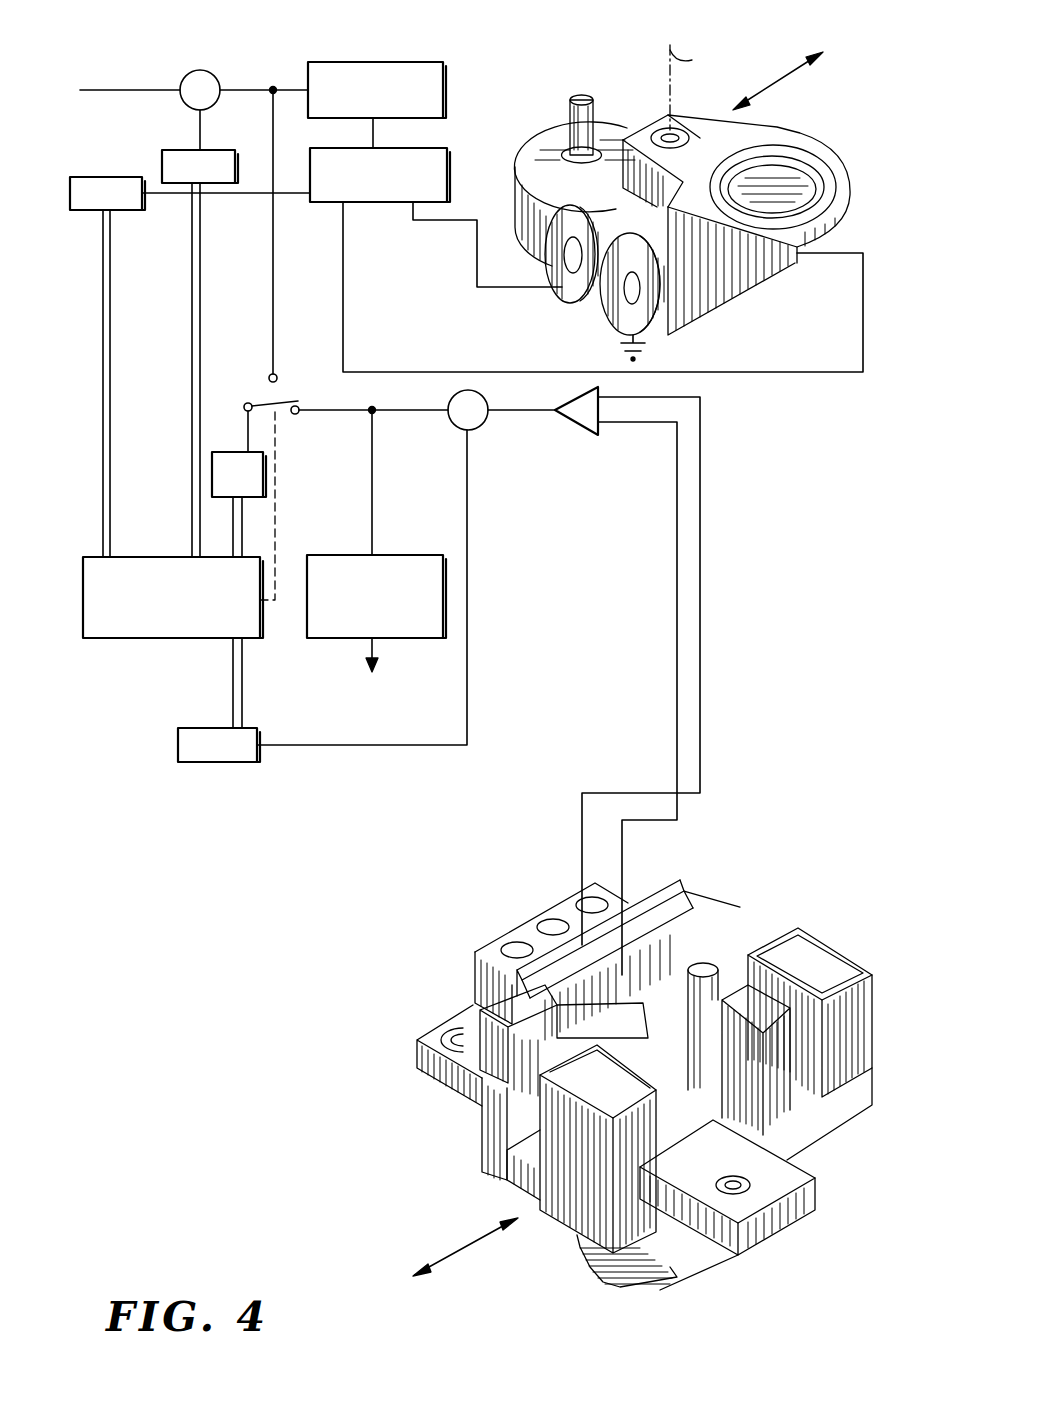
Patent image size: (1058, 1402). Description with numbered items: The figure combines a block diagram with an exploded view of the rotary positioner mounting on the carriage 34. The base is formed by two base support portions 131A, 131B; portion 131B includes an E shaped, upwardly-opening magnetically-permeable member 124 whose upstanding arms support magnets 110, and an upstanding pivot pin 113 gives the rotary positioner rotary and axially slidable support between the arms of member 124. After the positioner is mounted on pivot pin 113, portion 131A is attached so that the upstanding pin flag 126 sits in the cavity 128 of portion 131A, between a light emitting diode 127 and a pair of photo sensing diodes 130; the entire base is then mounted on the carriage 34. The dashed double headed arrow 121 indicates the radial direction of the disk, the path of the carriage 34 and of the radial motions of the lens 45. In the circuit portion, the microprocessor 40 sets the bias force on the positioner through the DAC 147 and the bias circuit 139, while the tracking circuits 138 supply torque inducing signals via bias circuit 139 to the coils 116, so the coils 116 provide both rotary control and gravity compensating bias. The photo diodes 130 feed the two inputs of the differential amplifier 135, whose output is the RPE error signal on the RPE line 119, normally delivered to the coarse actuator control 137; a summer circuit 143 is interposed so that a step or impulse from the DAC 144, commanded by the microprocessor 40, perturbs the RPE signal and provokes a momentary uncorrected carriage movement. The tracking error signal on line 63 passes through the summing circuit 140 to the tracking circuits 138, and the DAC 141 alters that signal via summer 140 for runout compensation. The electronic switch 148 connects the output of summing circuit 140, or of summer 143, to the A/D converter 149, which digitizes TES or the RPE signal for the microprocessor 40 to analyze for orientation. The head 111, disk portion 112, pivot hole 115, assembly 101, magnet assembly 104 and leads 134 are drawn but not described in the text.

The line 63 is at (116, 106).
The summing circuit 140 is at (213, 82).
The tracking circuits 138 is at (354, 62).
The bias circuit 139 is at (404, 152).
The DAC 141 is at (218, 152).
The DAC 147 is at (120, 180).
The electronic switch 148 is at (248, 402).
The A/D converter 149 is at (238, 452).
The microprocessor 40 is at (132, 639).
The coarse actuator control 137 is at (430, 555).
The DAC 144 is at (182, 726).
The summer circuit 143 is at (450, 402).
The RPE line 119 is at (505, 412).
The differential amplifier 135 is at (572, 425).
The coil drive lines 134 is at (700, 538).
The optical head body 111 is at (864, 222).
The disk portion of head 112 is at (528, 170).
The pin flag 126 is at (581, 102).
The pivot hole 115 is at (676, 128).
The dashed line double headed arrow 121 is at (780, 78).
The lens 45 is at (804, 170).
The coils 116 is at (603, 304).
The actuator assembly 101 is at (548, 1266).
The cavity 128 is at (616, 946).
The light emitting diode 127 is at (650, 950).
The photo sensing diodes 130 is at (568, 980).
The pivot pin 113 is at (718, 968).
The magnet assembly 104 is at (856, 911).
The magnets 110 is at (838, 1036).
The magnetically-permeable member 124 is at (802, 1133).
The base support portion 131A is at (494, 1118).
The base support portion 131B is at (522, 1176).
The carriage 34 is at (608, 1268).